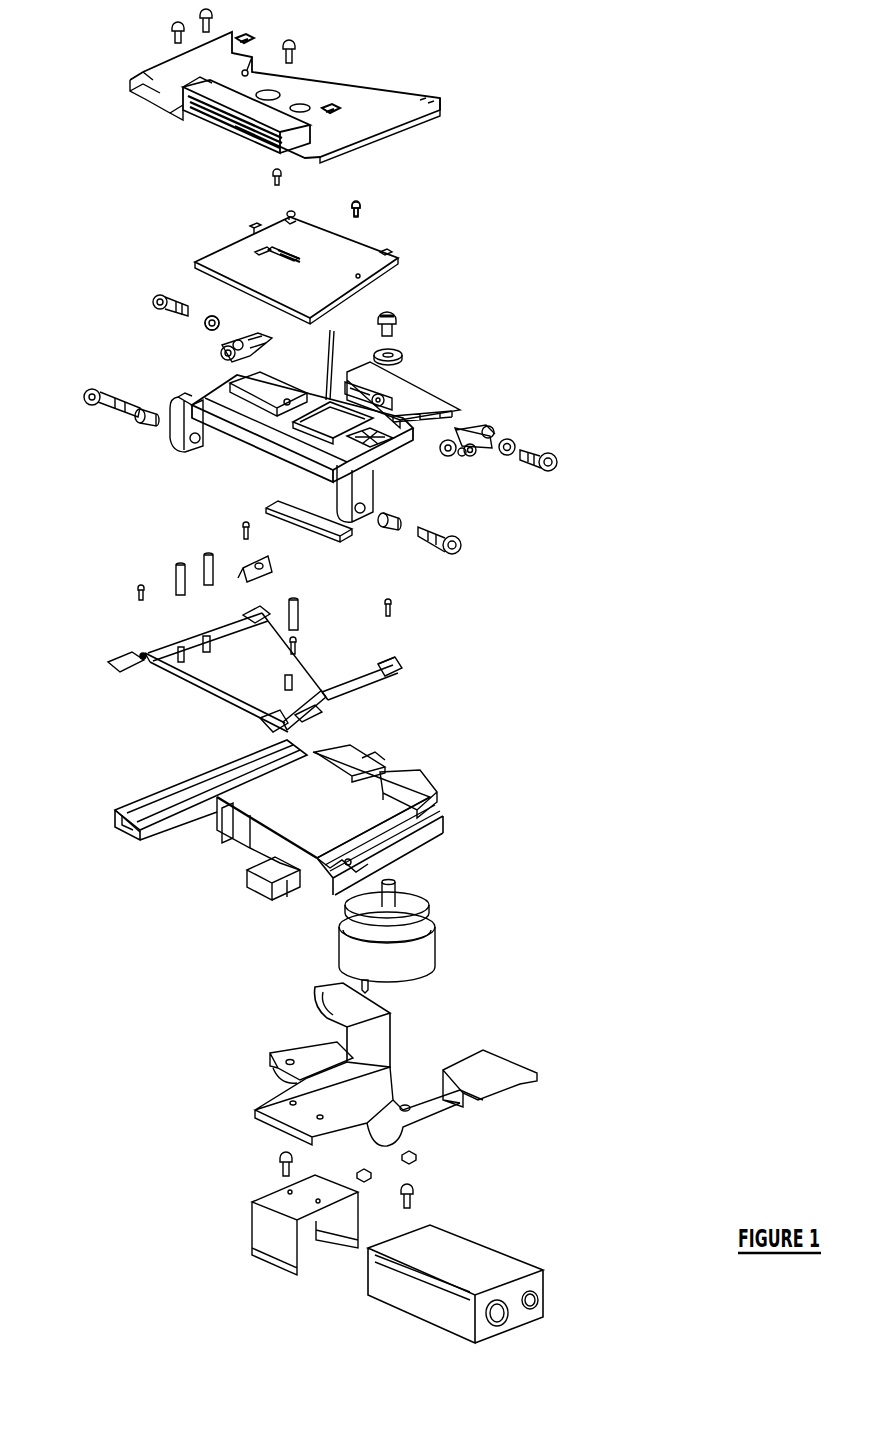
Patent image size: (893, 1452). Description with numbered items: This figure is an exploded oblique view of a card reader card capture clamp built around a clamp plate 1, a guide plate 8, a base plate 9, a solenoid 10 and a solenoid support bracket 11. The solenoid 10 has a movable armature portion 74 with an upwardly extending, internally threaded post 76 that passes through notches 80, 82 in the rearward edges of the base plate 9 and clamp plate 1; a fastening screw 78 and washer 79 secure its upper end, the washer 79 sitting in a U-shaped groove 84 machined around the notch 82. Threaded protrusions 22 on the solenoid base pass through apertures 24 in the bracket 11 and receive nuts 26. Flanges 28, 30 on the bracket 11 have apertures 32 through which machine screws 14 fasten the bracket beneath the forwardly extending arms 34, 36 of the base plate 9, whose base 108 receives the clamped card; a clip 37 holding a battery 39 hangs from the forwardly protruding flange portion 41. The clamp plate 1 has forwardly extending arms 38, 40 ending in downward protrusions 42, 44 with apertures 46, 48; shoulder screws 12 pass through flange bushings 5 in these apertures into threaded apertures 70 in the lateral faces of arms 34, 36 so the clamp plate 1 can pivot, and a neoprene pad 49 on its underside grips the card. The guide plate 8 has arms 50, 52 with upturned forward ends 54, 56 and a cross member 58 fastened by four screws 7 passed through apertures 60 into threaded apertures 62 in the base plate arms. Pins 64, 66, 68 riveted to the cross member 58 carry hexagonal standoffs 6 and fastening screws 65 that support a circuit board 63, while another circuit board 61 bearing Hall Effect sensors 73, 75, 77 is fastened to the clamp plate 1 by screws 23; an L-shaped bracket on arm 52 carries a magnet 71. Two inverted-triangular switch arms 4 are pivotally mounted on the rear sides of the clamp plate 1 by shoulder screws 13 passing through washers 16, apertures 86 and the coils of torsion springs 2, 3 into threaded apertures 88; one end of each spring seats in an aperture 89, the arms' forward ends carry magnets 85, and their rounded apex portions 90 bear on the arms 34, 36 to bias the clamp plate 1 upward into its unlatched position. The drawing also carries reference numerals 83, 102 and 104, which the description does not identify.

The clamp plate 1 is at (425, 385).
The first torsion spring 2 is at (490, 428).
The second torsion spring 3 is at (274, 338).
The switch arms 4 is at (210, 315).
The flange bushings 5 is at (140, 424).
The hexagonal standoffs 6 is at (176, 578).
The screws 7 is at (443, 603).
The guide plate 8 is at (396, 668).
The base plate 9 is at (438, 788).
The solenoid 10 is at (440, 945).
The solenoid support bracket 11 is at (318, 992).
The shoulder screws 12 is at (88, 405).
The shoulder screws 13 is at (152, 304).
The machine screws 14 is at (280, 1167).
The washers 16 is at (208, 318).
The threaded protrusions 22 is at (370, 988).
The fastening screws 23 is at (272, 177).
The apertures 24 is at (405, 1102).
The nuts 26 is at (418, 1164).
The flange 28 is at (468, 1112).
The flange 30 is at (295, 1054).
The aperture 32 is at (286, 1064).
The arm 34 is at (300, 900).
The arm 36 is at (160, 792).
The clip 37 is at (252, 1210).
The arm 38 is at (372, 470).
The battery 39 is at (500, 1257).
The arm 40 is at (178, 397).
The forwardly protruding flange portion 41 is at (270, 1120).
The downwardly extending protrusion 42 is at (335, 440).
The downwardly extending protrusion 44 is at (178, 452).
The aperture 46 is at (350, 515).
The aperture 48 is at (205, 425).
The neoprene pad 49 is at (278, 503).
The arm 50 is at (365, 700).
The arm 52 is at (222, 638).
The upturned forward end 54 is at (262, 728).
The upturned forward end 56 is at (112, 662).
The cross member 58 is at (235, 678).
The apertures 60 is at (118, 658).
The circuit board 61 is at (365, 207).
The threadably mating apertures 62 is at (248, 766).
The circuit board 63 is at (135, 78).
The pin 64 is at (296, 682).
The fastening screws 65 is at (170, 30).
The pin 66 is at (188, 648).
The pin 68 is at (146, 656).
The threadably mating apertures 70 is at (353, 866).
The magnet 71 is at (272, 572).
The Hall Effect sensor 73 is at (388, 252).
The movable armature portion 74 is at (425, 905).
The Hall Effect sensor 75 is at (293, 212).
The internally threaded post 76 is at (398, 892).
The Hall Effect sensor 77 is at (250, 226).
The fastening screw 78 is at (394, 312).
The washer 79 is at (400, 352).
The notch 80 is at (386, 772).
The notch 82 is at (384, 396).
The rod 83 is at (333, 334).
The U-shaped groove 84 is at (352, 386).
The magnets 85 is at (222, 358).
The apertures 86 is at (264, 342).
The threadably mating apertures 88 is at (486, 428).
The aperture 89 is at (440, 436).
The apex portions 90 is at (236, 352).
The rail end 102 is at (250, 885).
The rail end 104 is at (116, 830).
The base 108 is at (262, 824).